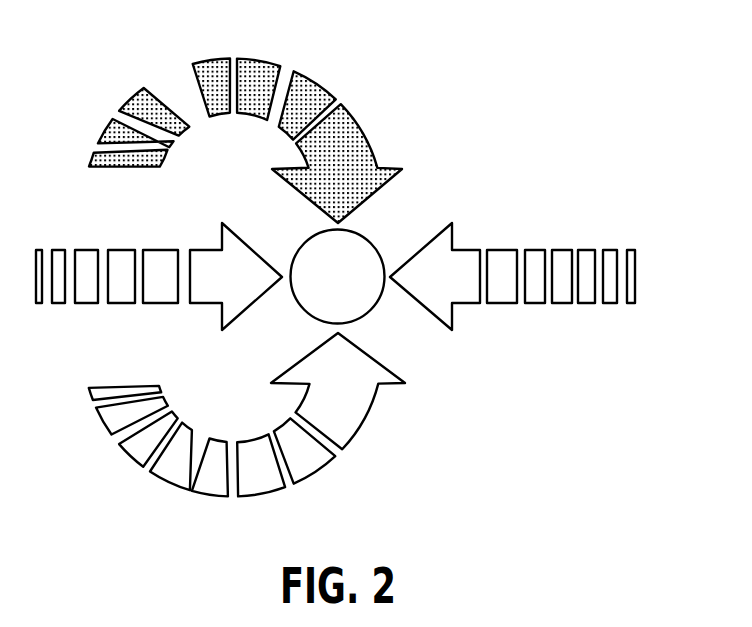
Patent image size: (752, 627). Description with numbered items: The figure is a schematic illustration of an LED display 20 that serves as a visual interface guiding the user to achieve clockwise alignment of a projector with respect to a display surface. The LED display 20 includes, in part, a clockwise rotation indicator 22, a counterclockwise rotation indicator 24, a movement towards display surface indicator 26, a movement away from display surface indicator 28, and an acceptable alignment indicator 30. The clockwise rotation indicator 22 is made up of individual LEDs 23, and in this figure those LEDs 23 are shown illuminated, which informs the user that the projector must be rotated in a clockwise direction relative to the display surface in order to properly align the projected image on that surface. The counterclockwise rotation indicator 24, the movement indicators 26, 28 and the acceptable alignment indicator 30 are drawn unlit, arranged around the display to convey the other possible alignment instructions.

The LED display 20 is at (634, 103).
The clockwise rotation indicator 22 is at (325, 81).
The LEDs 23 is at (152, 76).
The counterclockwise rotation indicator 24 is at (340, 466).
The movement towards display surface indicator 26 is at (156, 245).
The movement away from display surface indicator 28 is at (514, 246).
The acceptable alignment indicator 30 is at (373, 247).